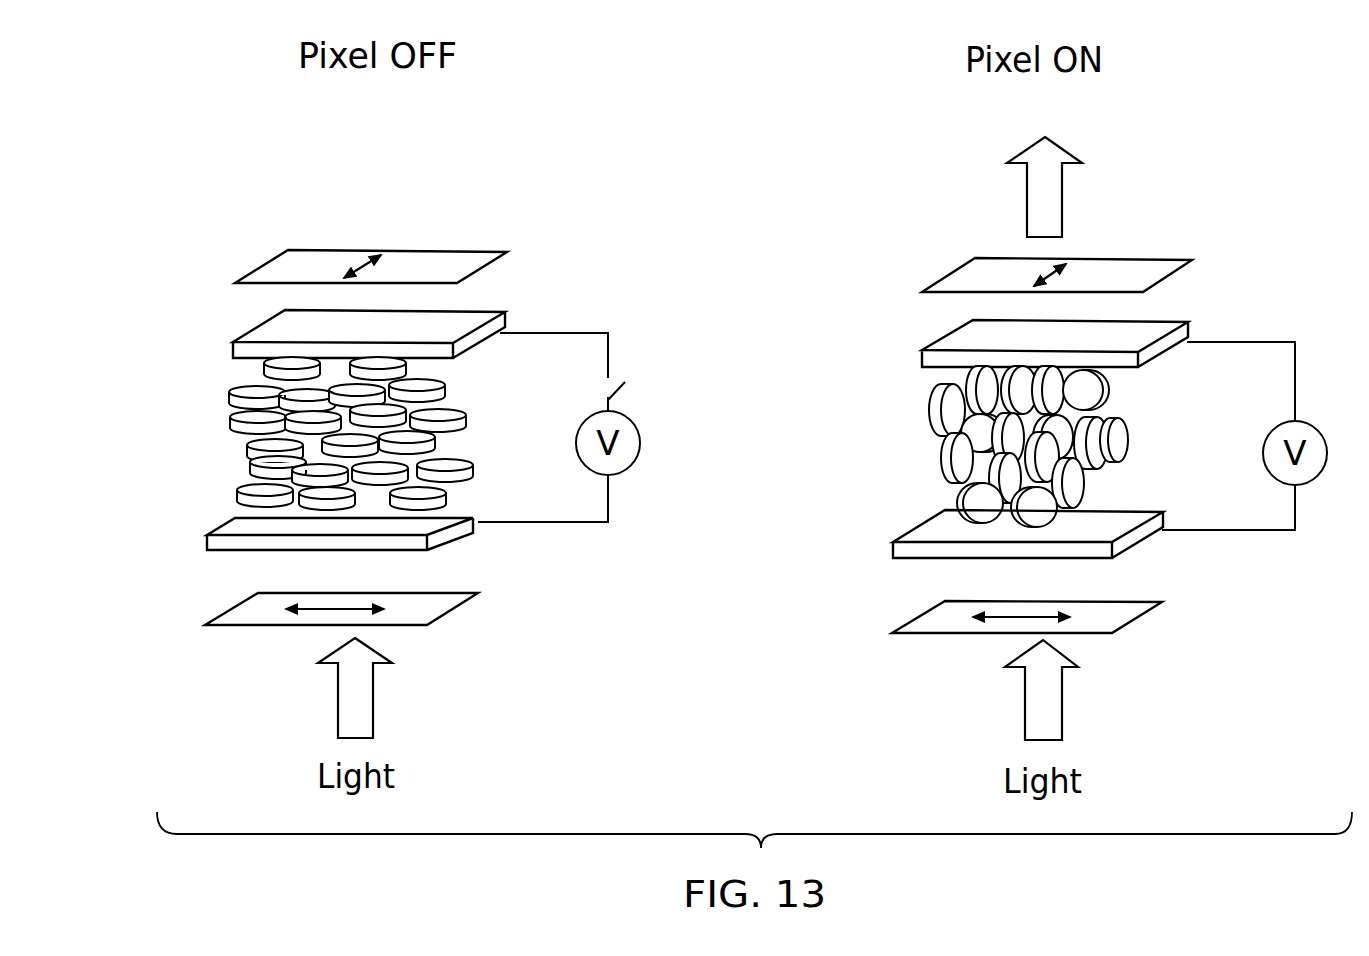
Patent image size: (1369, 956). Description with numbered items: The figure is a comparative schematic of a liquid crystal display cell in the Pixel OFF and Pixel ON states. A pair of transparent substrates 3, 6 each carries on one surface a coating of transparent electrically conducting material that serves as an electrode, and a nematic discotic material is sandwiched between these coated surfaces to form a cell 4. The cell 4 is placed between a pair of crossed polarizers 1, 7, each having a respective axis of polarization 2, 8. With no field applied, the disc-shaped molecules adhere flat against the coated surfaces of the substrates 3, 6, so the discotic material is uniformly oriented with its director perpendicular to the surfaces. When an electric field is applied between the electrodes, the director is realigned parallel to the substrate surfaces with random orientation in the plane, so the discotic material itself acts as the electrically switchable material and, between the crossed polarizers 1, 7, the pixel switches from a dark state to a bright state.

The polarizer 1 is at (473, 250).
The axis of polarization 2 is at (352, 268).
The transparent substrate 3 is at (500, 313).
The cell 4 is at (203, 342).
The transparent substrate 6 is at (467, 523).
The polarizer 7 is at (453, 613).
The axis of polarization 8 is at (317, 608).